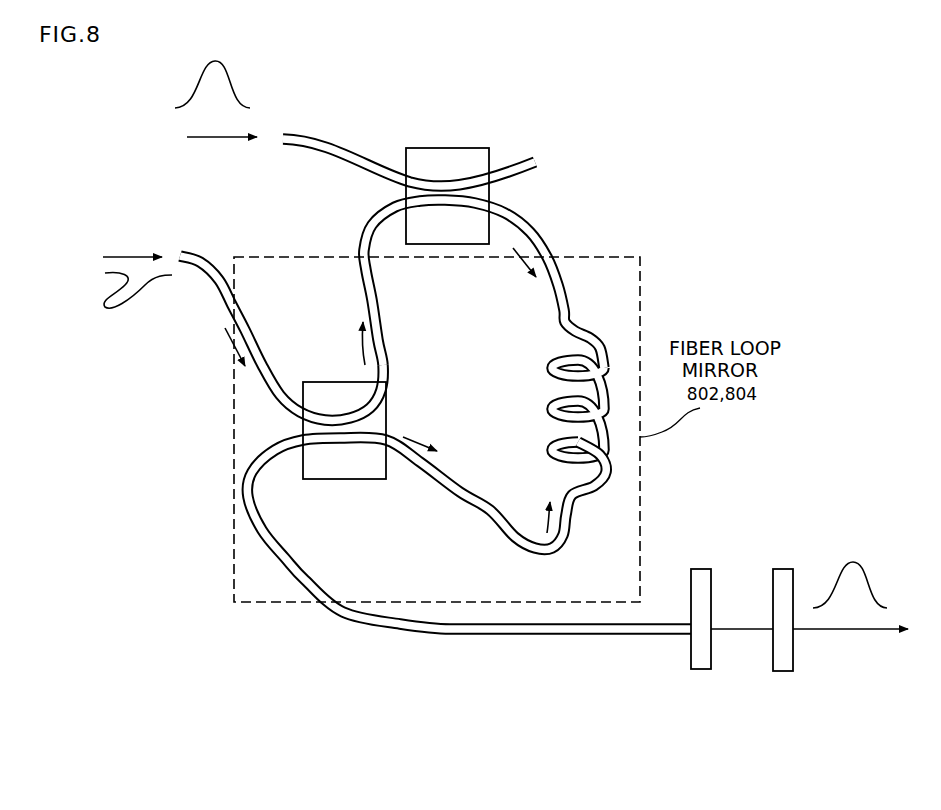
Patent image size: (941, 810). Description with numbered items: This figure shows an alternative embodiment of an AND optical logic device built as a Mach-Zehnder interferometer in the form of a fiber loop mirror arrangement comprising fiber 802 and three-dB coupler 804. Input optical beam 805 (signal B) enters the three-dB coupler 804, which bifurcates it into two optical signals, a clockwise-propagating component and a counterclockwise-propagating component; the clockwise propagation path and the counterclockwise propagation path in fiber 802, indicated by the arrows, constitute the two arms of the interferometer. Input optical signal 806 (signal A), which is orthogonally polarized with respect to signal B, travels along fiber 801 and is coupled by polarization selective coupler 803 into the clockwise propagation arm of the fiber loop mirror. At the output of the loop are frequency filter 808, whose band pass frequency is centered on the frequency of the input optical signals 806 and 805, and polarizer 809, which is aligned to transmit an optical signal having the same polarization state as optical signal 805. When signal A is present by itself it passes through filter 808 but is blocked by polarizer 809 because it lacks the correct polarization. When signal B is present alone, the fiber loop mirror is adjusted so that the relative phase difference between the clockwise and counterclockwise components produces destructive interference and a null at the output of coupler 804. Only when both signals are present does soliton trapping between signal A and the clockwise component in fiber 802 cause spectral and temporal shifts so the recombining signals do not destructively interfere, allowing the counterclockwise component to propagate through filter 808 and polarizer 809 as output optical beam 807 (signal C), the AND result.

The fiber 801 is at (315, 134).
The fiber 802 is at (547, 252).
The polarization selective coupler 803 is at (447, 147).
The 3 dB coupler 804 is at (284, 507).
The input optical beam 805 is at (240, 338).
The input optical signal 806 is at (224, 76).
The output optical beam 807 is at (863, 577).
The frequency filter 808 is at (690, 667).
The polarizer 809 is at (777, 568).